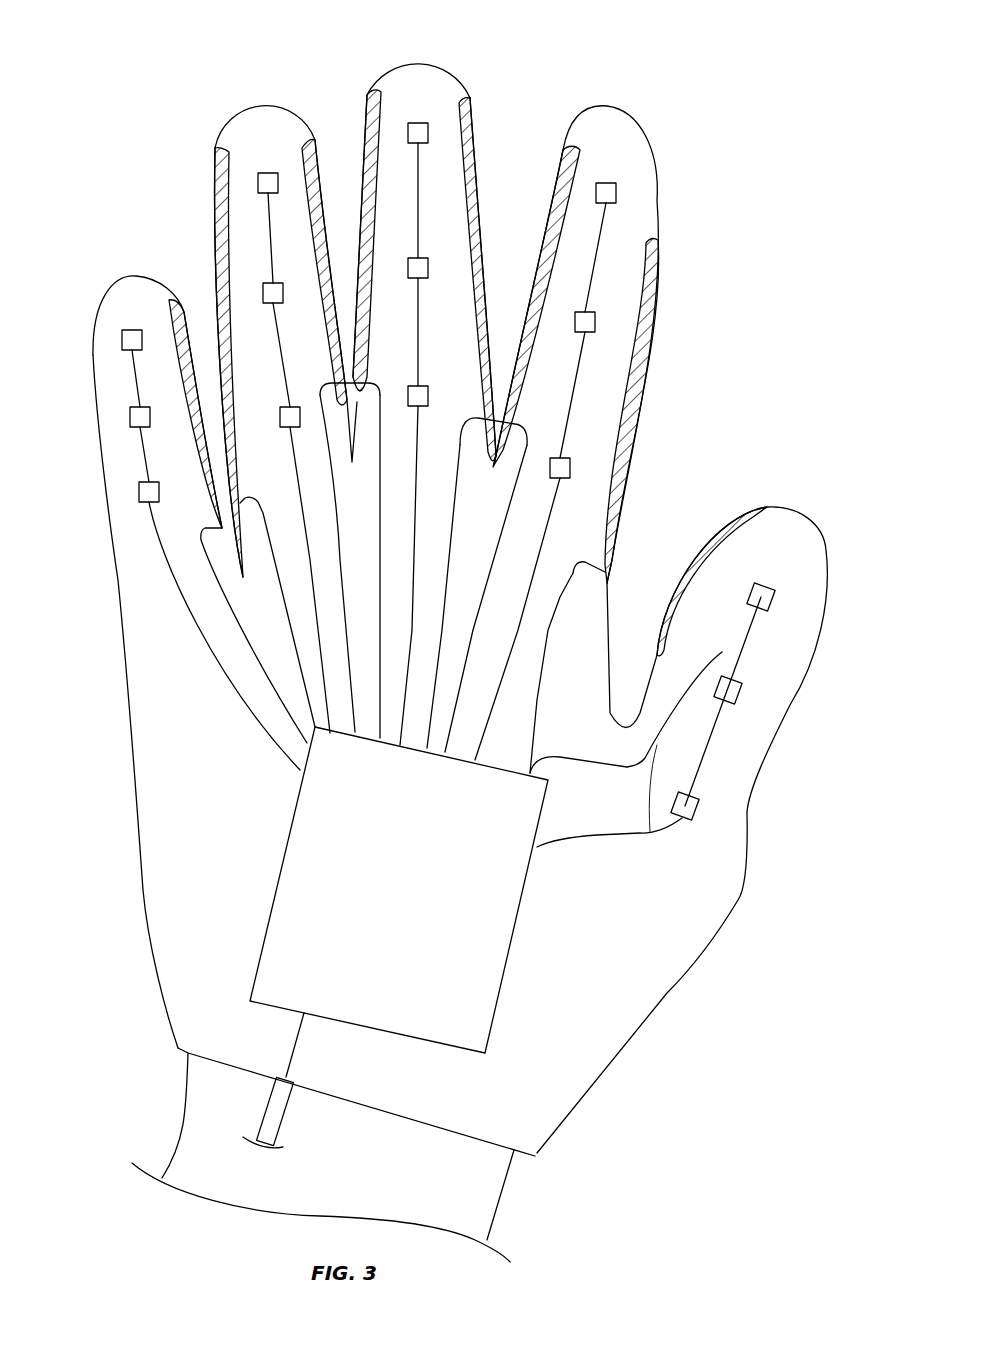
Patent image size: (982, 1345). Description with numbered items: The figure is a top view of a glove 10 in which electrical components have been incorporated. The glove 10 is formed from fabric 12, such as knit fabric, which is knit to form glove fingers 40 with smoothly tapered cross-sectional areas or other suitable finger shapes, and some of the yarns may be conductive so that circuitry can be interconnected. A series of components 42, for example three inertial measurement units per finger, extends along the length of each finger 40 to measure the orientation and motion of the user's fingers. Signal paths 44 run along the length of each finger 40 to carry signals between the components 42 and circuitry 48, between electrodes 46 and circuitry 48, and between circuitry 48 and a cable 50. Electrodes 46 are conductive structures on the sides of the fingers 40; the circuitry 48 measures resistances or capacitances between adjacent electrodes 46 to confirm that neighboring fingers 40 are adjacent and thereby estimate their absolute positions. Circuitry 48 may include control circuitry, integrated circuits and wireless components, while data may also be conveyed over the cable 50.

The glove 10 is at (748, 195).
The fabric 12 is at (674, 990).
The glove fingers 40 is at (132, 280).
The components 42 is at (140, 495).
The signal paths 44 is at (136, 363).
The electrodes 46 is at (172, 305).
The circuitry 48 is at (527, 930).
The cable 50 is at (285, 1118).